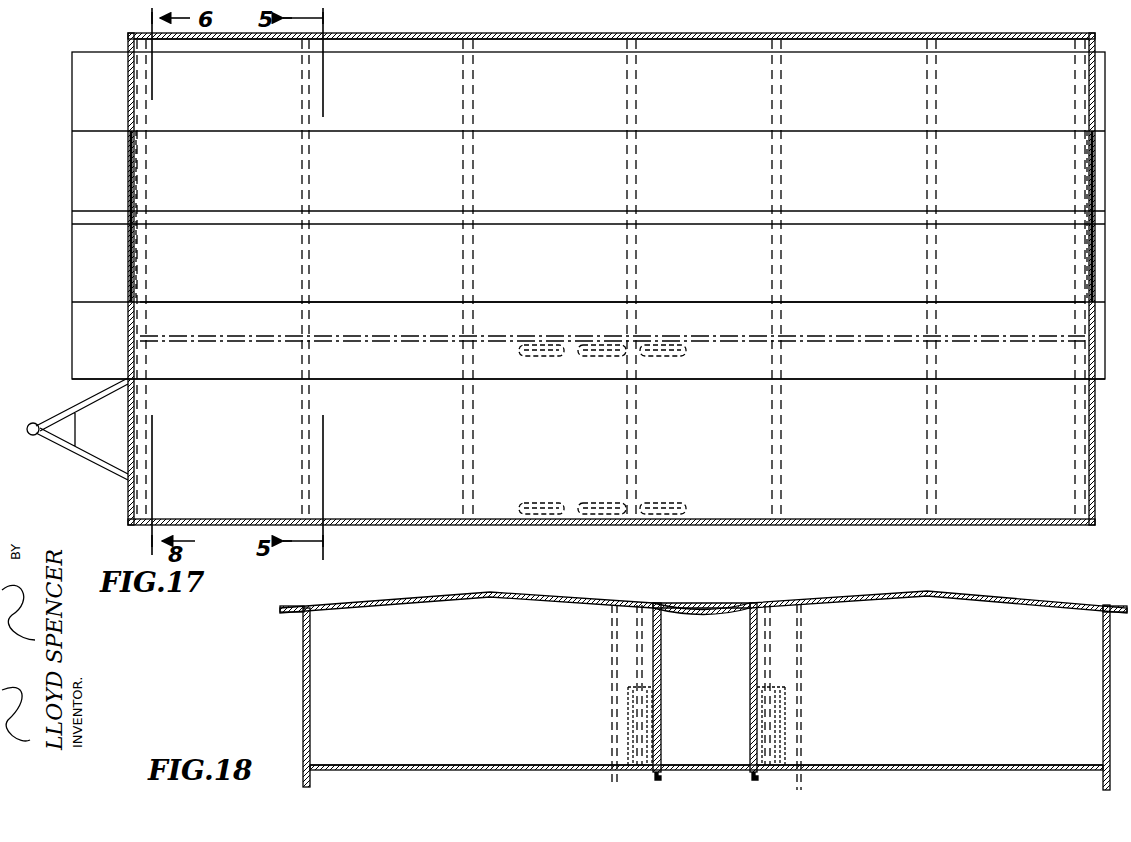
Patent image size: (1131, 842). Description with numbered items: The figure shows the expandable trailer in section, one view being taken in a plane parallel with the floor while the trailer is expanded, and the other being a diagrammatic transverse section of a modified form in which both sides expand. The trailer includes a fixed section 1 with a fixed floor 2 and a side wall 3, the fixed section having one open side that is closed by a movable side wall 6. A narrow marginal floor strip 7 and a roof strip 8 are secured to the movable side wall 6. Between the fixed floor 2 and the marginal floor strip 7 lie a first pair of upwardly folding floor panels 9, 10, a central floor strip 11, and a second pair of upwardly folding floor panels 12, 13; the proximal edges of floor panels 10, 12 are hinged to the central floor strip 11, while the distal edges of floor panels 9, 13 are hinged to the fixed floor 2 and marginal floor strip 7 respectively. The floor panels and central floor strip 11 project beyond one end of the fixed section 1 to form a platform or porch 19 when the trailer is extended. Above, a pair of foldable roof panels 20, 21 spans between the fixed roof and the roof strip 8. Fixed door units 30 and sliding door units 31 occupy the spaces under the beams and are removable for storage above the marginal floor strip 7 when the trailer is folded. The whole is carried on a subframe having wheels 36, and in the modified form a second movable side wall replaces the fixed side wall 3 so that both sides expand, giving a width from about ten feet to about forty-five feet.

In FIG. 17, the fixed section 1 is at (165, 466).
In FIG. 17, the fixed floor 2 is at (588, 418).
In FIG. 18, the fixed floor 2 is at (691, 765).
In FIG. 17, the side wall 3 is at (488, 526).
In FIG. 17, the movable side wall 6 is at (589, 40).
In FIG. 18, the movable side wall 6 is at (312, 724).
In FIG. 17, the marginal floor strip 7 is at (547, 43).
In FIG. 18, the marginal floor strip 7 is at (1095, 765).
In FIG. 18, the roof strip 8 is at (318, 608).
In FIG. 17, the floor panel 9 is at (612, 315).
In FIG. 18, the floor panel 9 is at (584, 764).
In FIG. 17, the floor panel 10 is at (588, 277).
In FIG. 18, the floor panel 10 is at (530, 765).
In FIG. 17, the central floor strip 11 is at (578, 218).
In FIG. 18, the central floor strip 11 is at (492, 763).
In FIG. 17, the floor panel 12 is at (588, 189).
In FIG. 18, the floor panel 12 is at (452, 765).
In FIG. 17, the floor panel 13 is at (588, 110).
In FIG. 18, the floor panel 13 is at (352, 765).
In FIG. 17, the platform or porch 19 is at (78, 192).
In FIG. 18, the roof panel 20 is at (546, 594).
In FIG. 18, the roof panel 21 is at (404, 600).
In FIG. 17, the fixed door units 30 is at (128, 85).
In FIG. 17, the sliding door units 31 is at (130, 150).
In FIG. 17, the wheels 36 is at (645, 344).